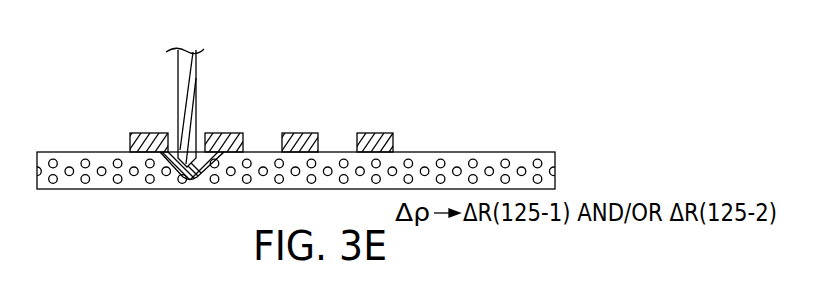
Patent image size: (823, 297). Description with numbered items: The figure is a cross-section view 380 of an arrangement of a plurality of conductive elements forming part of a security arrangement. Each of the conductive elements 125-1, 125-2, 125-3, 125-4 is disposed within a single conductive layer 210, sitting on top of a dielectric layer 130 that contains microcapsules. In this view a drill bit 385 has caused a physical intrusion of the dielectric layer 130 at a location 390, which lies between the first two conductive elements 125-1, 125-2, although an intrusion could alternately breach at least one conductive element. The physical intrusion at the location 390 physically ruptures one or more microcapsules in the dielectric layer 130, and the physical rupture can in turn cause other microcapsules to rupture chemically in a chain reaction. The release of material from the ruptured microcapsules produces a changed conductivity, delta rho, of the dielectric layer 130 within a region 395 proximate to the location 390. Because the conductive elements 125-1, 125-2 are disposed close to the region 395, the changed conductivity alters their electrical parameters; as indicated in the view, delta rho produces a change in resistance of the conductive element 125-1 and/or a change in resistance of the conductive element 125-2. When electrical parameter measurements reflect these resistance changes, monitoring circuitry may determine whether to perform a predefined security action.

The conductive element 125-1 is at (145, 132).
The conductive element 125-2 is at (235, 133).
The conductive element 125-3 is at (295, 133).
The conductive element 125-4 is at (376, 133).
The dielectric layer 130 is at (555, 160).
The conductive layer 210 is at (522, 125).
The cross-section view 380 is at (559, 114).
The drill bit 385 is at (177, 87).
The location 390 is at (199, 132).
The region 395 is at (195, 180).